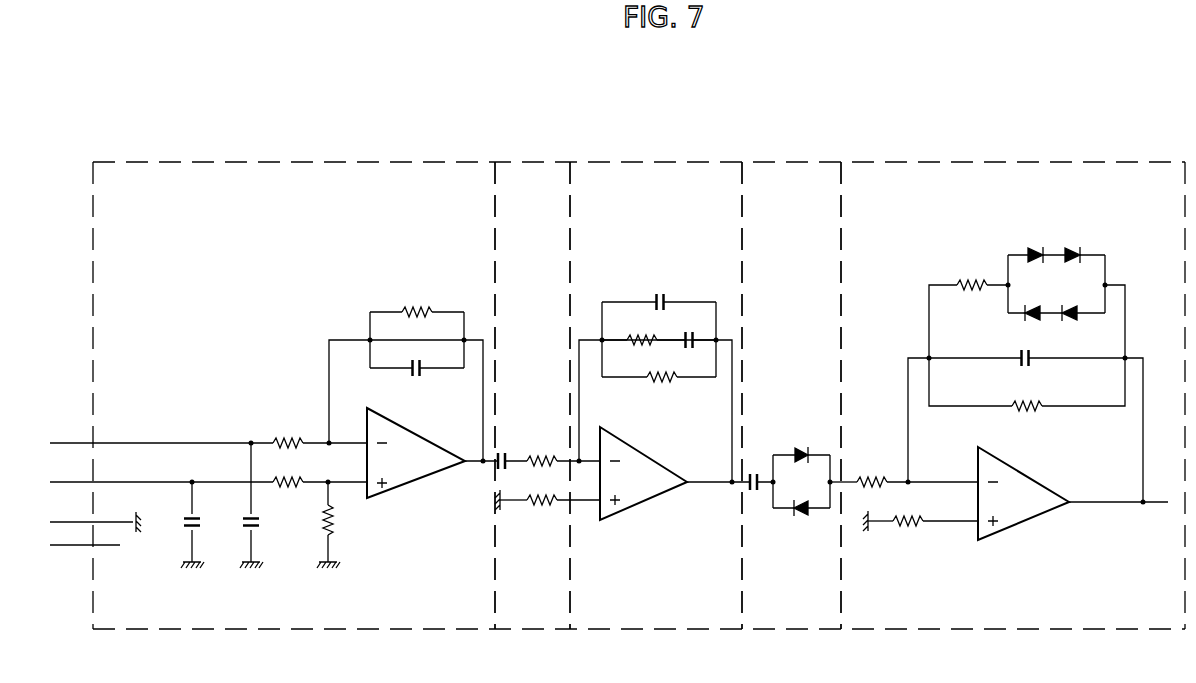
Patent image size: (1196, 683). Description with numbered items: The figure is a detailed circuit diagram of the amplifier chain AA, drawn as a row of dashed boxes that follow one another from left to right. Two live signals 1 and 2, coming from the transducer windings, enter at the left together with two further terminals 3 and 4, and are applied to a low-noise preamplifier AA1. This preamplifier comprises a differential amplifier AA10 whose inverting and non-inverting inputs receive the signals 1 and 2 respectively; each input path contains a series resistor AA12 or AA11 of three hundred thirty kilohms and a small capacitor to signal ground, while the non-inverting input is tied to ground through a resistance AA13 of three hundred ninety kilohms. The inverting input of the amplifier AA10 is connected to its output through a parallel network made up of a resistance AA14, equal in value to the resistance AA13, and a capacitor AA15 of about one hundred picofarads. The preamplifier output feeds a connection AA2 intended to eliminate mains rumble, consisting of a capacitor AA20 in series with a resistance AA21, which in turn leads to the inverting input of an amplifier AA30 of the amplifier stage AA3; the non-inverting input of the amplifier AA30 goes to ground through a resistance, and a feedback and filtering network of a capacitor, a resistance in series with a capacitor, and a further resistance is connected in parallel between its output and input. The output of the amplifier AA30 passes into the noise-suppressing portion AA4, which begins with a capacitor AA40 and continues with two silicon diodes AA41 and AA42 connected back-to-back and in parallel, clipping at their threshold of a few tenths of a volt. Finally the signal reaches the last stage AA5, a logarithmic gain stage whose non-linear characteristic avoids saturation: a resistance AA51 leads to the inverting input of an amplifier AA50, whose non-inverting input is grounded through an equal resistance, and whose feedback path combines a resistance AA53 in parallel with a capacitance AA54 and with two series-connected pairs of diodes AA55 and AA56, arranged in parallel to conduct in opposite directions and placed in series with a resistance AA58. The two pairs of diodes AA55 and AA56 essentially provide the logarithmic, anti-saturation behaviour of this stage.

The amplifier chain AA is at (196, 112).
The low-noise preamplifier AA1 is at (393, 161).
The connection AA2 is at (552, 161).
The amplifier stage AA3 is at (690, 161).
The portion of the means AA AA4 is at (809, 126).
The last stage AA5 is at (1018, 161).
The differential amplifier AA10 is at (415, 470).
The resistor AA11 is at (290, 487).
The resistor AA12 is at (283, 440).
The resistance AA13 is at (335, 522).
The resistance AA14 is at (408, 308).
The capacitor AA15 is at (426, 372).
The capacitor AA20 is at (503, 455).
The resistance AA21 is at (550, 457).
The amplifier AA30 is at (655, 459).
The capacitor AA40 is at (753, 491).
The diode AA41 is at (800, 449).
The diode AA42 is at (804, 517).
The amplifier AA50 is at (1030, 518).
The resistance AA51 is at (874, 479).
The resistance AA53 is at (1035, 409).
The capacitance AA54 is at (1018, 364).
The pair of diodes AA55 is at (1070, 250).
The pair of diodes AA56 is at (1072, 318).
The resistance AA58 is at (963, 282).
The live signal 1 is at (161, 435).
The live signal 2 is at (161, 474).
The ground terminal 3 is at (95, 519).
The terminal 4 is at (85, 537).